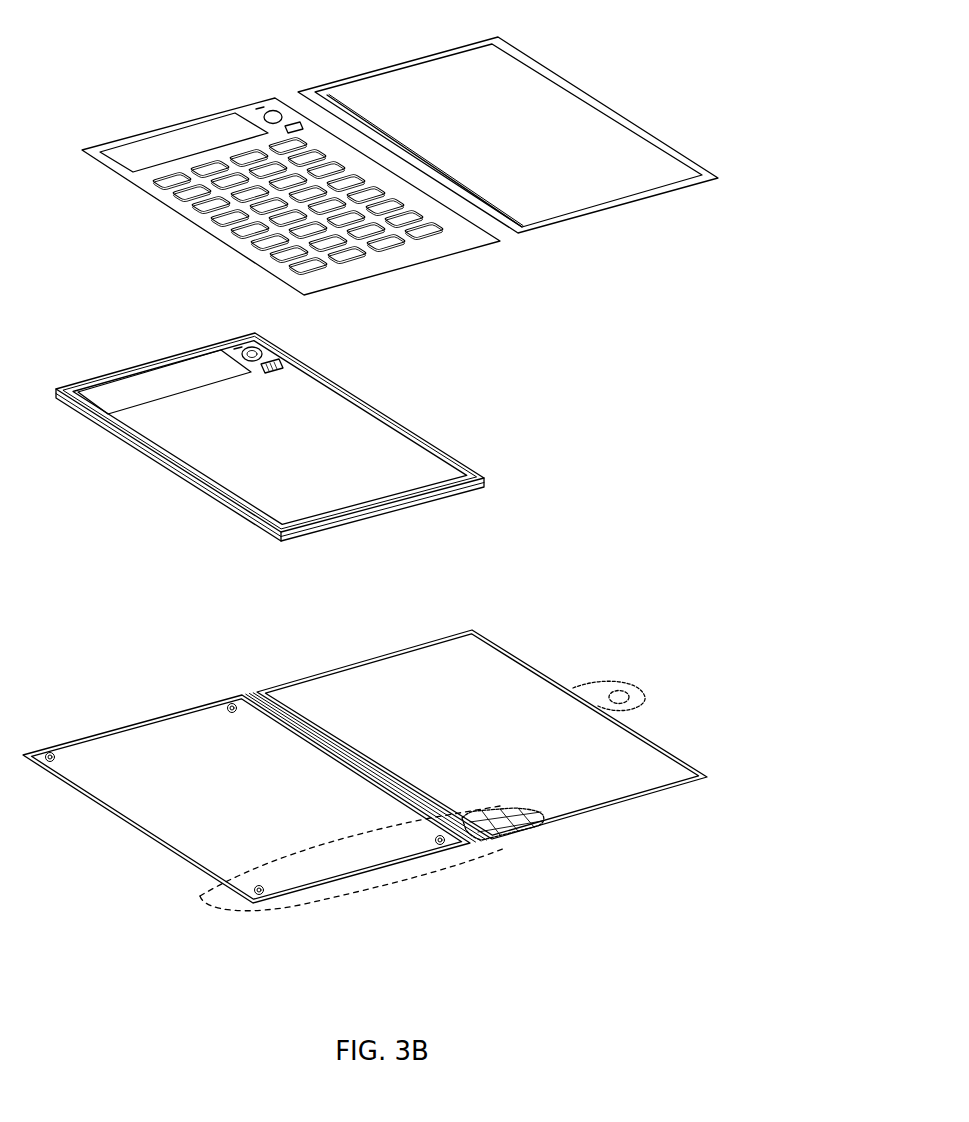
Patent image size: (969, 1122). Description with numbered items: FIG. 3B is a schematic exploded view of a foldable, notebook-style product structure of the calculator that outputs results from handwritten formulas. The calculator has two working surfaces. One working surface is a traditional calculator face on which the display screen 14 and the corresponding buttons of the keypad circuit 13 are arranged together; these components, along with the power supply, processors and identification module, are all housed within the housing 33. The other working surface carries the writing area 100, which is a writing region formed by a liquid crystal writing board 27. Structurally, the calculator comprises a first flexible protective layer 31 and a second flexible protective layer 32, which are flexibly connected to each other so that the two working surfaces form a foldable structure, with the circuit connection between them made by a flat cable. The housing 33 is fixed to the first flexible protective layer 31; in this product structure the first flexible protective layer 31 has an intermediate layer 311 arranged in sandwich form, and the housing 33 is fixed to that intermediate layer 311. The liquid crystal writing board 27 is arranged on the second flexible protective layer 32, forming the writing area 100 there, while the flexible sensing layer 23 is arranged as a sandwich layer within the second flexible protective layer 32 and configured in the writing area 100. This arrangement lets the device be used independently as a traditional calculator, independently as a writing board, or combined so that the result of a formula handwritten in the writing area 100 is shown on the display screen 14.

The writing area 100 is at (400, 152).
The liquid crystal writing board 27 is at (545, 97).
The display screen 14 is at (165, 382).
The keypad circuit 13 is at (375, 447).
The housing 33 is at (257, 421).
The first flexible protective layer 31 is at (264, 809).
The intermediate layer 311 is at (377, 853).
The second flexible protective layer 32 is at (497, 682).
The flexible sensing layer 23 is at (506, 828).